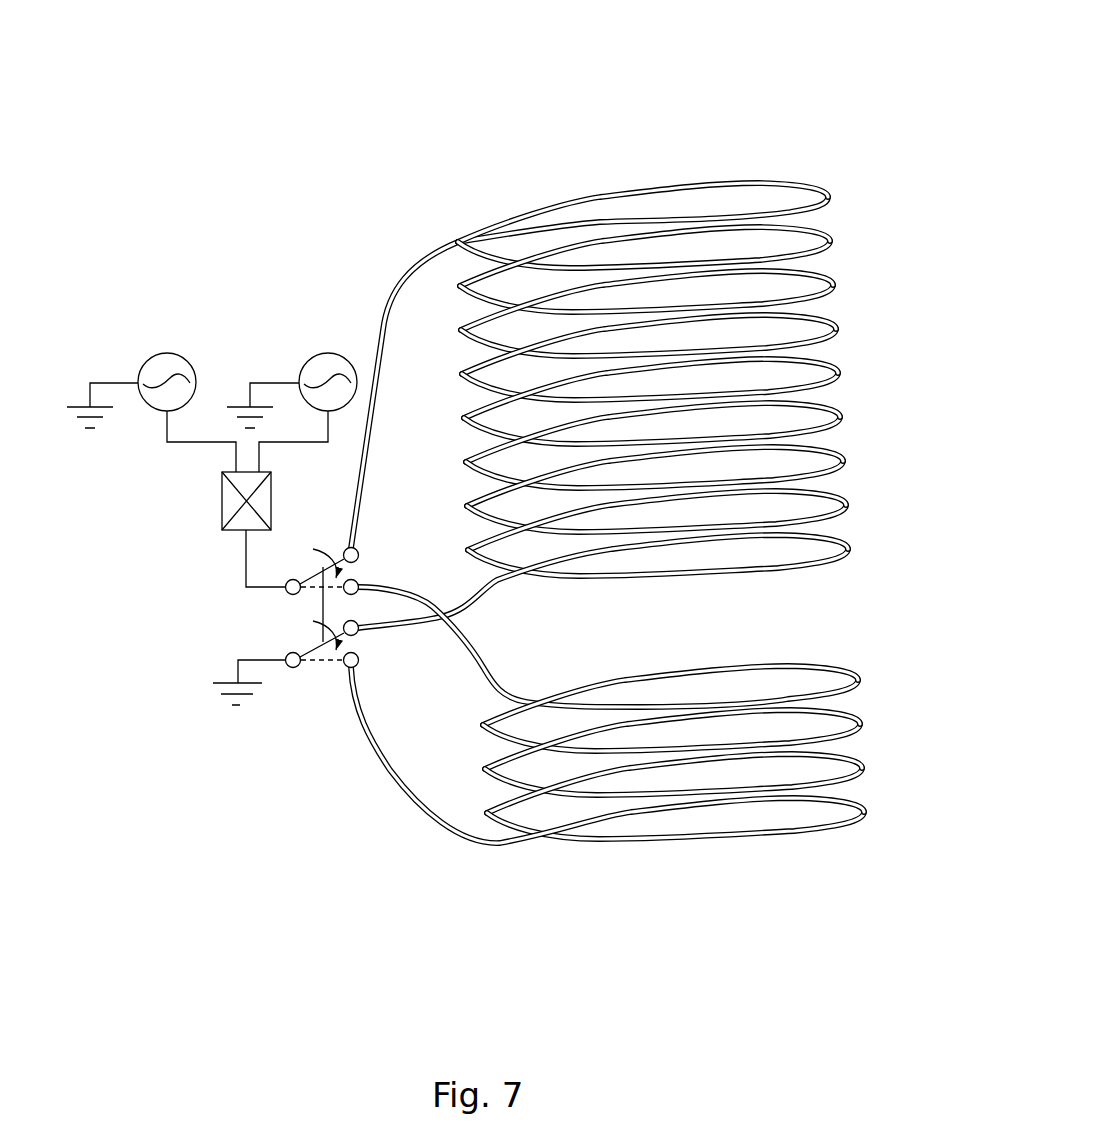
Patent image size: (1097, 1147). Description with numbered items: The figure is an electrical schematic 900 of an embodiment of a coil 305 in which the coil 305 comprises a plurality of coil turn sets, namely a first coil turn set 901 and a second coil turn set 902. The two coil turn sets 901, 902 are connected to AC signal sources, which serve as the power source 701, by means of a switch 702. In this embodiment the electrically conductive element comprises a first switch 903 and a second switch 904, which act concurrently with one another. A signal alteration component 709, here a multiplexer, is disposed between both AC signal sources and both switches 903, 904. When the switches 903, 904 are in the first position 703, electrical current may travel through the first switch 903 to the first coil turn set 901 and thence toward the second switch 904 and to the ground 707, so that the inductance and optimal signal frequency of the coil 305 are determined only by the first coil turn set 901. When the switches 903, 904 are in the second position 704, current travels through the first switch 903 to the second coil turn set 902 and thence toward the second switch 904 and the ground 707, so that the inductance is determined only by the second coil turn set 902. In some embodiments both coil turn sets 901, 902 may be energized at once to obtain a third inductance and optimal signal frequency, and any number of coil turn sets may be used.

The electrical schematic 900 is at (231, 58).
The coil 305 is at (637, 154).
The power source 701 is at (306, 338).
The switch 702 is at (305, 541).
The first position 703 is at (369, 538).
The second position 704 is at (366, 562).
The electrical ground 707 is at (210, 708).
The signal alteration component 709 is at (208, 531).
The first coil turn set 901 is at (827, 170).
The second coil turn set 902 is at (850, 663).
The first switch 903 is at (283, 604).
The second switch 904 is at (293, 682).